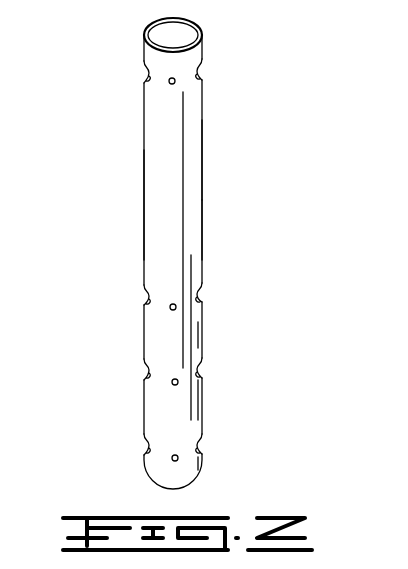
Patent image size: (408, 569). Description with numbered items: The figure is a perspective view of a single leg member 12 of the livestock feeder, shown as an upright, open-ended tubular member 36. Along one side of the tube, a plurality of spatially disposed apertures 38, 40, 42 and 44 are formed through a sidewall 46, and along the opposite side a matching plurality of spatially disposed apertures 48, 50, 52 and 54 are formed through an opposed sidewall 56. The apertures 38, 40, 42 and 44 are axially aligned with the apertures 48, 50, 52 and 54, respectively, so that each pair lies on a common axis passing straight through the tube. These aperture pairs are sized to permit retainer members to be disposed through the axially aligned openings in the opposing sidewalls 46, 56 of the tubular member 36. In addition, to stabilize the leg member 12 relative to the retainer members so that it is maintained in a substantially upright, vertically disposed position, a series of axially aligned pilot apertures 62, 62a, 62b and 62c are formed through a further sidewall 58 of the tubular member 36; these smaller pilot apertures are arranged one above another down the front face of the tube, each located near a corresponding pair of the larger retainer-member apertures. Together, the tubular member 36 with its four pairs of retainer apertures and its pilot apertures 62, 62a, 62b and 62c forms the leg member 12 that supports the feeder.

The leg member 12 is at (222, 101).
The tubular member 36 is at (203, 162).
The aperture 38 is at (143, 66).
The aperture 40 is at (144, 291).
The aperture 42 is at (144, 368).
The aperture 44 is at (144, 440).
The sidewall 46 is at (144, 224).
The aperture 48 is at (204, 68).
The aperture 50 is at (204, 292).
The aperture 52 is at (204, 368).
The aperture 54 is at (204, 443).
The opposed sidewall 56 is at (203, 223).
The sidewall 58 is at (160, 150).
The pilot aperture 62 is at (169, 81).
The pilot aperture 62a is at (170, 307).
The pilot aperture 62b is at (172, 382).
The pilot aperture 62c is at (172, 458).